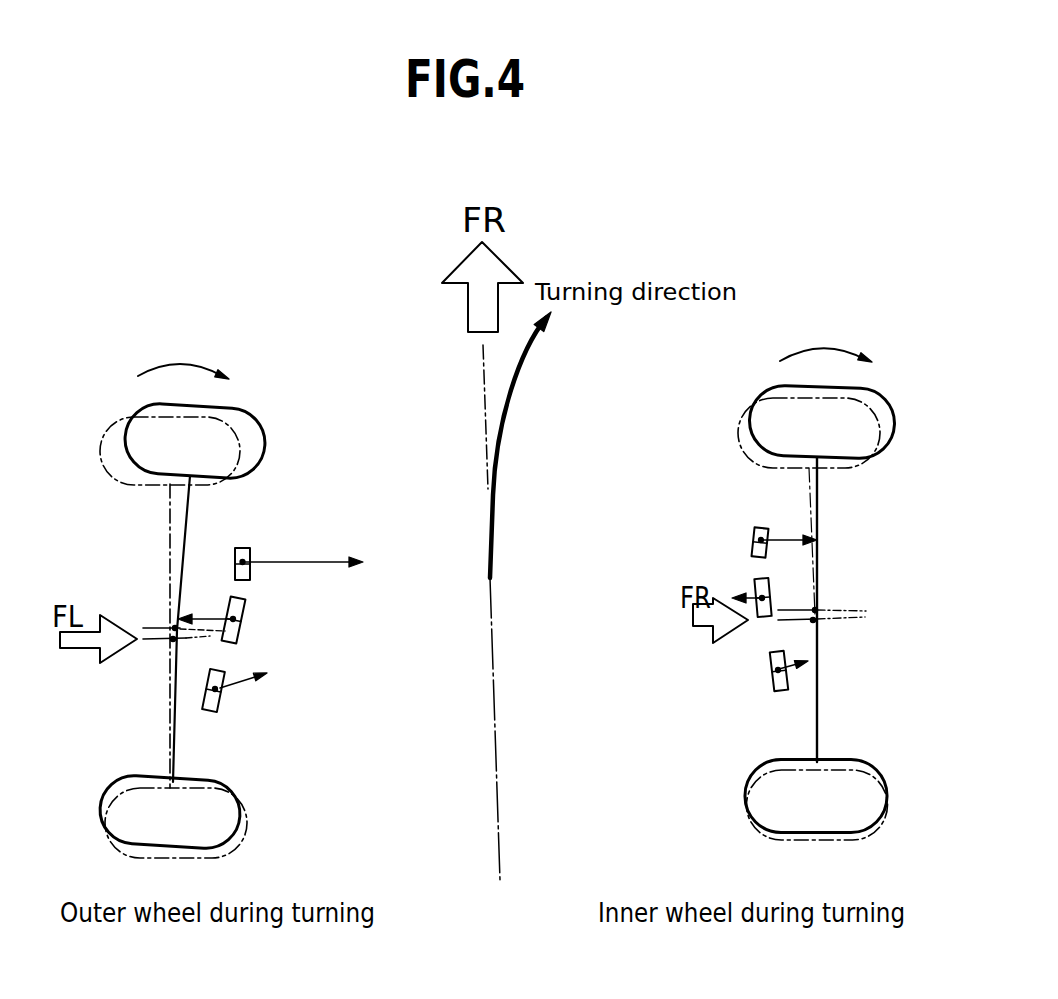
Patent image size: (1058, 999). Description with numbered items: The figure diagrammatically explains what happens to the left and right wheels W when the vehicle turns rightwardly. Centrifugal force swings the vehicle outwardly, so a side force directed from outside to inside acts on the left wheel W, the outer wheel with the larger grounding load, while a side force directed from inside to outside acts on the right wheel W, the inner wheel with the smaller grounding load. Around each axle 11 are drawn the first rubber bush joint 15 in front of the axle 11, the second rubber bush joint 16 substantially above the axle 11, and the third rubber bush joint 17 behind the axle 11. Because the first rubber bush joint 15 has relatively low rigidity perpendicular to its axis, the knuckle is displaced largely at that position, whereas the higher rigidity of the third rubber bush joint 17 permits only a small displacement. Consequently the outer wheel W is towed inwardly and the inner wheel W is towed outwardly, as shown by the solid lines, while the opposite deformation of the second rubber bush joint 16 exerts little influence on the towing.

The wheel W is at (252, 416).
The axle 11 is at (173, 627).
The first rubber bush joint 15 is at (240, 548).
The second rubber bush joint 16 is at (245, 615).
The third rubber bush joint 17 is at (218, 708).